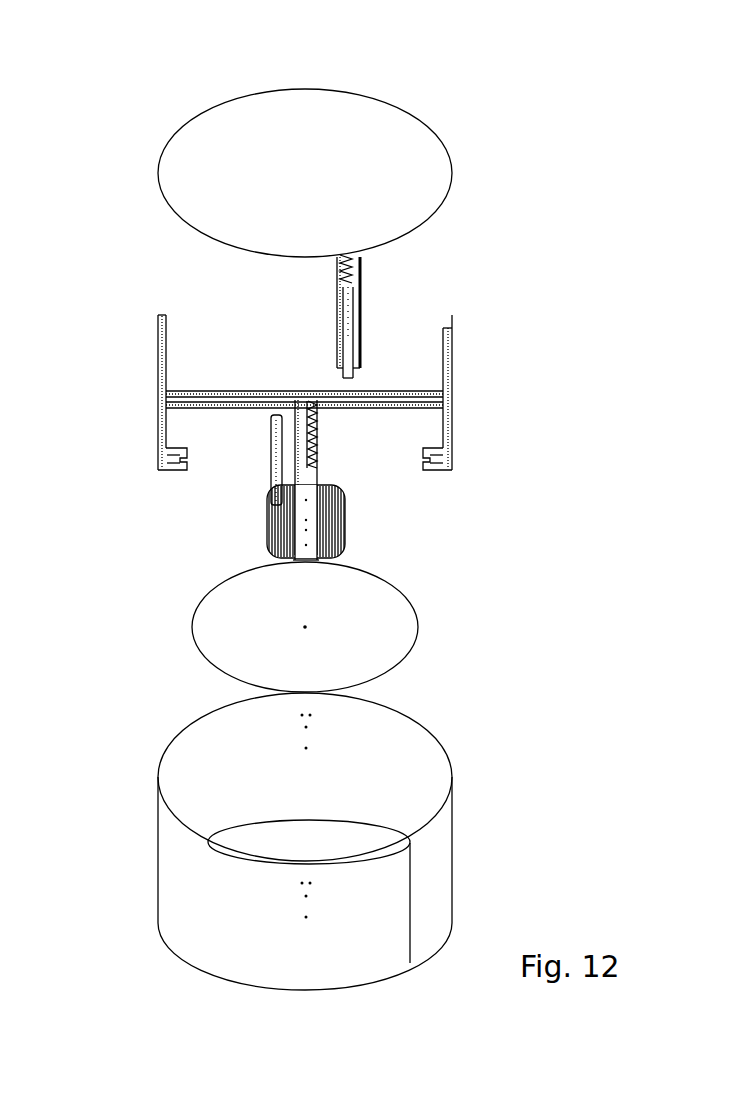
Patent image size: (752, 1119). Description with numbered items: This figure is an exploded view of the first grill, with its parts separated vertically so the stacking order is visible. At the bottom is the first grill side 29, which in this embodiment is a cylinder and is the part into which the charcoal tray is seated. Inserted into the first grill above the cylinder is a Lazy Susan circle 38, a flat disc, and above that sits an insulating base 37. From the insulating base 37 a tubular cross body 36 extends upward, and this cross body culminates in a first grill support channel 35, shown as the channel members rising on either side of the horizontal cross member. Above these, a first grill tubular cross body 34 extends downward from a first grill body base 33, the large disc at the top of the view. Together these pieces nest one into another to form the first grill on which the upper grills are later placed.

The first grill body base 33 is at (273, 90).
The first grill tubular cross body 34 is at (357, 318).
The first grill support channel 35 is at (158, 337).
The cross body 36 is at (295, 396).
The insulating base 37 is at (345, 520).
The Lazy Susan circle 38 is at (238, 678).
The first grill side 29 is at (407, 845).